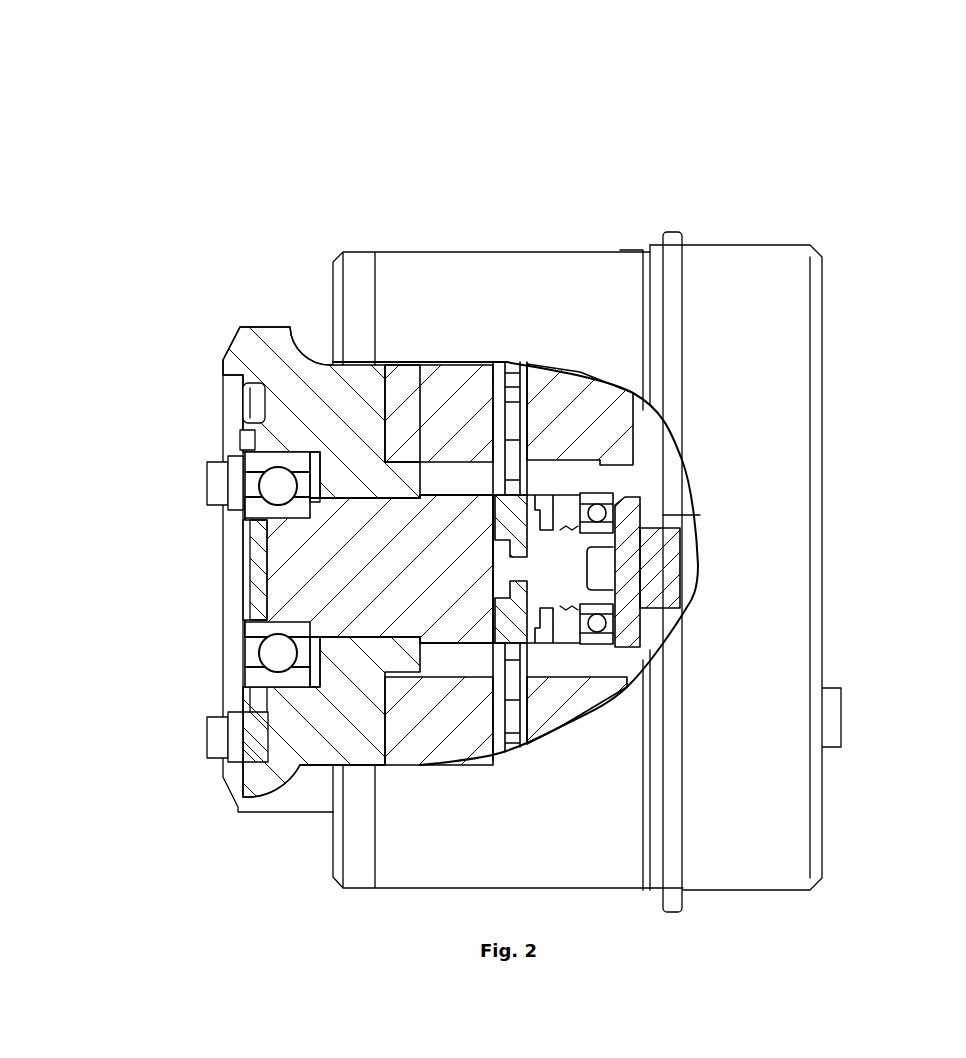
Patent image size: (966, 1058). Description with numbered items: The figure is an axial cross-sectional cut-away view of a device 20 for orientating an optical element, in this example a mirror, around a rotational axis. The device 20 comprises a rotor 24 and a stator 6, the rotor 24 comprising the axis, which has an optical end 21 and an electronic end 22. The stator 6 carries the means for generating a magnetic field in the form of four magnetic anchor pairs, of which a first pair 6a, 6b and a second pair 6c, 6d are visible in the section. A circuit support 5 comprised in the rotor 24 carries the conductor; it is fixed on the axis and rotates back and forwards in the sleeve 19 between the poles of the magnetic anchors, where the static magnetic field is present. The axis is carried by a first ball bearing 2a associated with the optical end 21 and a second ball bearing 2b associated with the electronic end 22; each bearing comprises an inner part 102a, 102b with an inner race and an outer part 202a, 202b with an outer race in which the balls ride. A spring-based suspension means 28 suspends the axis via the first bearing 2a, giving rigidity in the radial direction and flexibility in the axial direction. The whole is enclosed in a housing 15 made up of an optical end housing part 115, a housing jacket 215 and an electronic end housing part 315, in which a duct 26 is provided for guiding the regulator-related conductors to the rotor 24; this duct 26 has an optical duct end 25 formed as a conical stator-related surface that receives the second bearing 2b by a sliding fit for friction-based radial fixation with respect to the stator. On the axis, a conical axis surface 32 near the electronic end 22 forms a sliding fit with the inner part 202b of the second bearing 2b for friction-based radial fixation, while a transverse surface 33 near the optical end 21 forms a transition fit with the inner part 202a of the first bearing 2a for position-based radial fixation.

The device 20 is at (852, 104).
The first ball bearing 2a is at (242, 447).
The second ball bearing 2b is at (692, 516).
The circuit support 5 is at (537, 360).
The stator 6 is at (465, 388).
The magnetic anchor 6a is at (418, 380).
The magnetic anchor 6b is at (582, 396).
The magnetic anchor 6c is at (440, 767).
The magnetic anchor 6d is at (542, 720).
The housing 15 is at (415, 268).
The optical end housing part 115 is at (320, 350).
The housing jacket 215 is at (445, 270).
The electronic end housing part 315 is at (742, 280).
The sleeve 19 is at (523, 360).
The optical end 21 is at (270, 596).
The electronic end 22 is at (636, 620).
The rotor 24 is at (306, 588).
The optical duct end 25 is at (615, 612).
The duct 26 is at (672, 550).
The suspension means 28 is at (258, 400).
The conical axis surface 32 is at (592, 640).
The transverse surface 33 is at (262, 650).
The inner part 102a is at (222, 475).
The inner part 102b is at (683, 462).
The outer part 202a is at (260, 500).
The outer part 202b is at (605, 550).